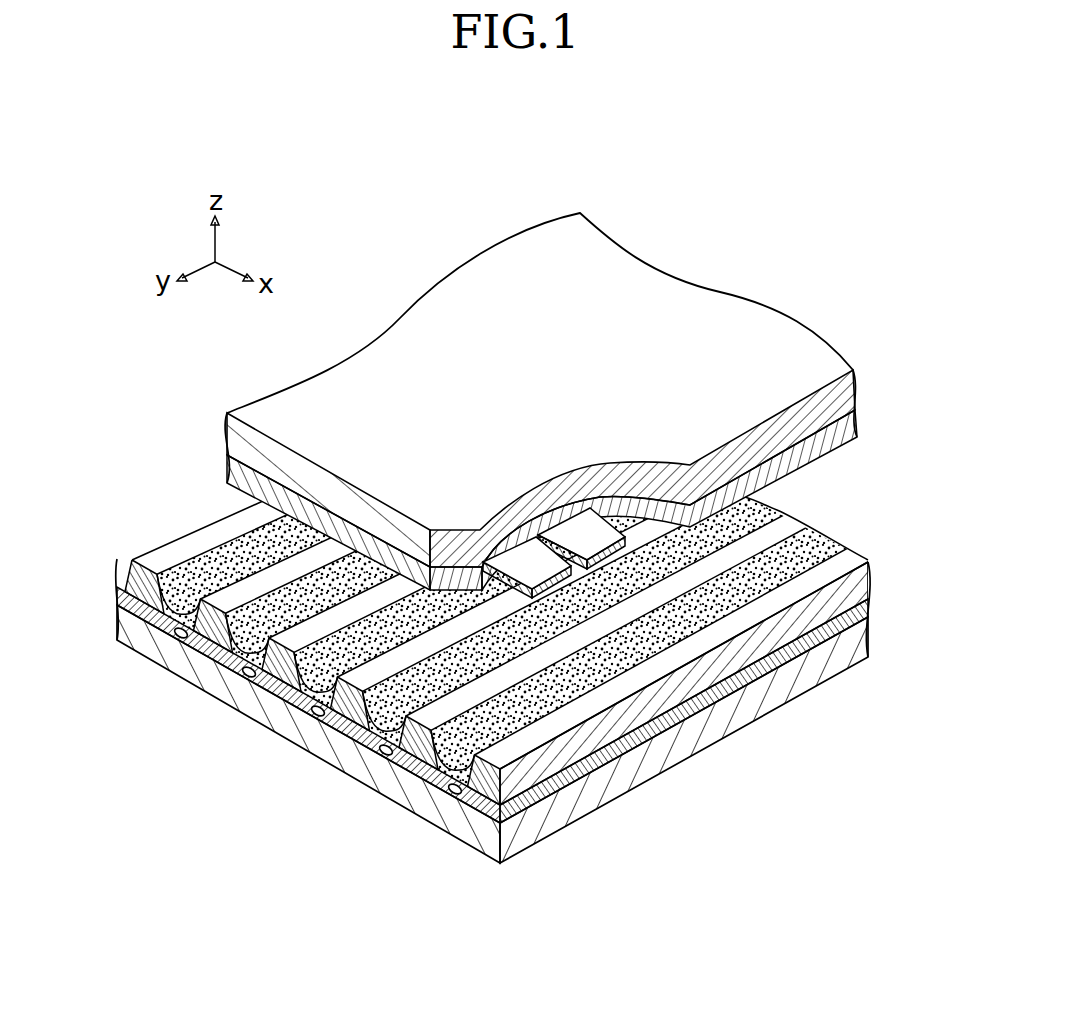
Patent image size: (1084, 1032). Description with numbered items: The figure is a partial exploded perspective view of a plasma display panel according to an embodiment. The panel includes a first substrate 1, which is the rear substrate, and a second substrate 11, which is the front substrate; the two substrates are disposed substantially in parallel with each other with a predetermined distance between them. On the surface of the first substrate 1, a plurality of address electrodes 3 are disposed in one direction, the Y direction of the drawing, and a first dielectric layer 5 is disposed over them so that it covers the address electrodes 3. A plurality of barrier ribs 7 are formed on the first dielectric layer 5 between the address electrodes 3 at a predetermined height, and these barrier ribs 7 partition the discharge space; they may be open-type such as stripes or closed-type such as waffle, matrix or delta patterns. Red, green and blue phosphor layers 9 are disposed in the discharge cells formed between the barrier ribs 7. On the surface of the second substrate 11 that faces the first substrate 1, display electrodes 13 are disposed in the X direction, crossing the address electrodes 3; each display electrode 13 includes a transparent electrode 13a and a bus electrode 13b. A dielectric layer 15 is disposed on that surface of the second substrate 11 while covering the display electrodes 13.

The first substrate 1 is at (453, 820).
The address electrodes 3 is at (173, 642).
The first dielectric layer 5 is at (120, 597).
The barrier ribs 7 is at (285, 668).
The phosphor layers 9 is at (199, 562).
The second substrate 11 is at (685, 302).
The display electrodes 13 is at (533, 490).
The transparent electrode 13a is at (520, 562).
The bus electrode 13b is at (497, 598).
The dielectric layer 15 is at (860, 421).